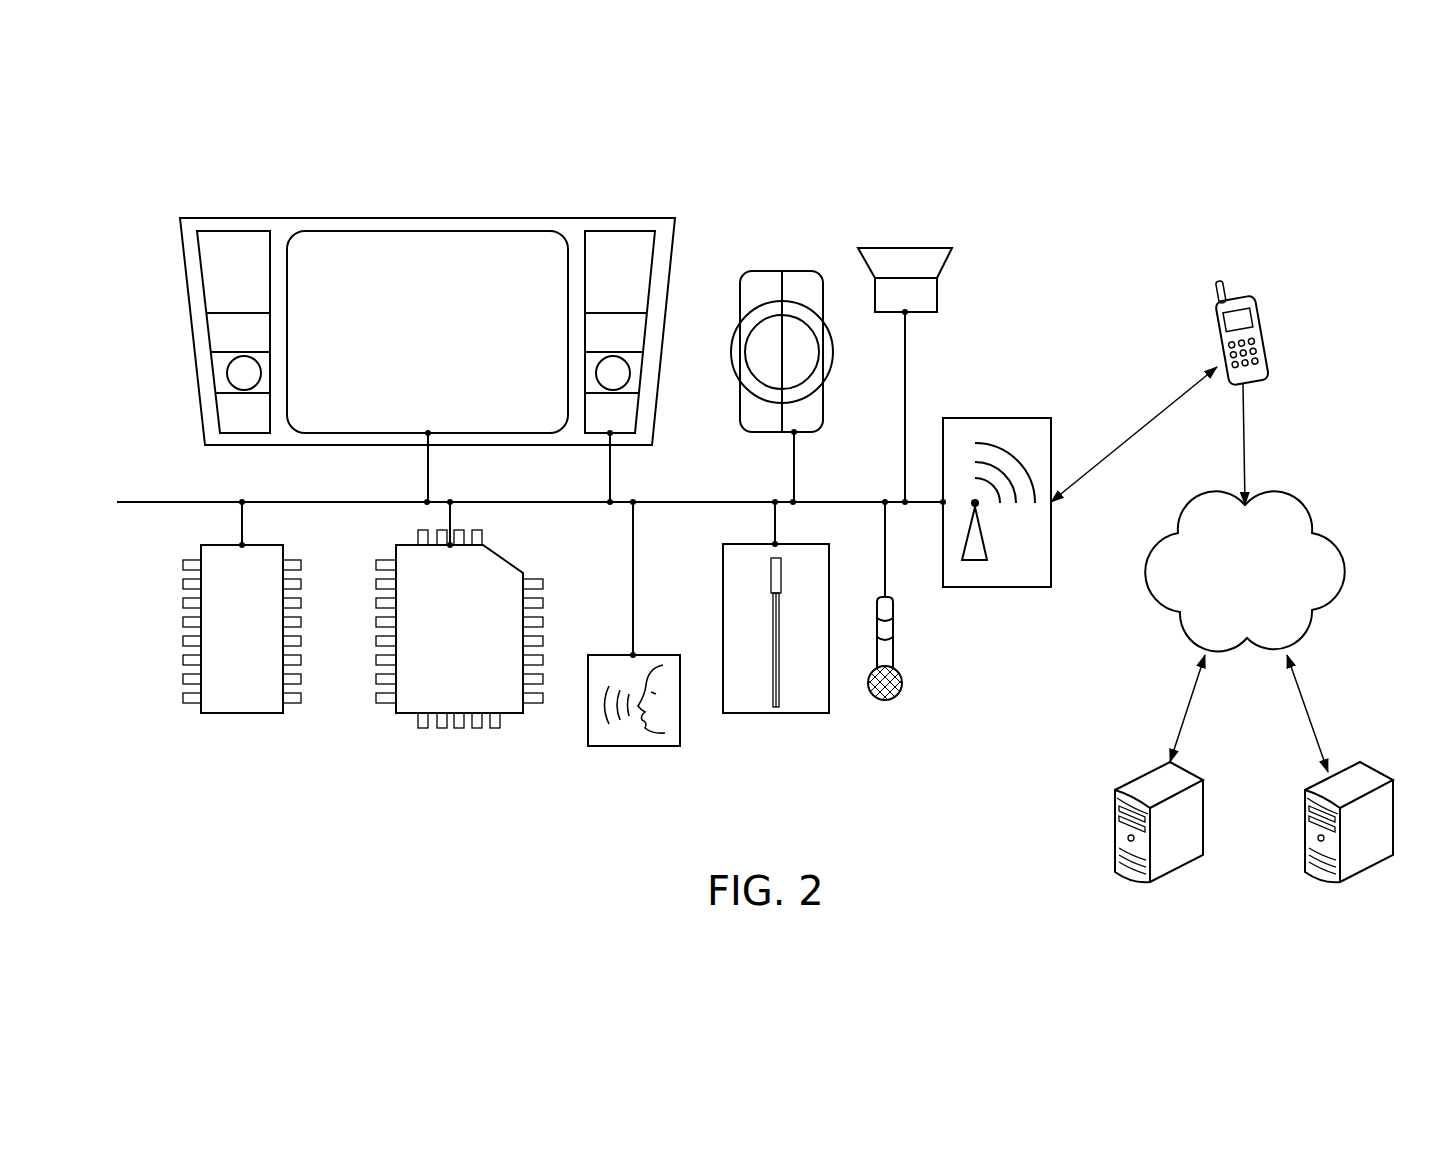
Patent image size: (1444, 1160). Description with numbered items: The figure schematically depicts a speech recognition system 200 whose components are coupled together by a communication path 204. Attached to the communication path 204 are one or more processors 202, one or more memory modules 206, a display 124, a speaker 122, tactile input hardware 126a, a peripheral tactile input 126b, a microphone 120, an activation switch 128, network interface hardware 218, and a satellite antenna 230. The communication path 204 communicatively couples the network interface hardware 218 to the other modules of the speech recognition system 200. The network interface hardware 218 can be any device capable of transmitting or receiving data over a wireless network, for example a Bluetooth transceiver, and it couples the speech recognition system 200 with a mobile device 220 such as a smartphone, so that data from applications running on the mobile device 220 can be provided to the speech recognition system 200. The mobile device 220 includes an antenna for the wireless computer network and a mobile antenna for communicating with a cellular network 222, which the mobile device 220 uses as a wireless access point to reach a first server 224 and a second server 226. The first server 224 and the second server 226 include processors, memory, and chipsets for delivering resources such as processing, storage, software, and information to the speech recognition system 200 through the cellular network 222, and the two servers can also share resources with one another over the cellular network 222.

The speech recognition system 200 is at (1200, 238).
The microphone 120 is at (898, 630).
The speaker 122 is at (925, 247).
The display 124 is at (428, 245).
The tactile input hardware 126a is at (252, 372).
The peripheral tactile input 126b is at (768, 270).
The activation switch 128 is at (613, 748).
The processor 202 is at (405, 716).
The communication path 204 is at (152, 505).
The memory module 206 is at (242, 716).
The network interface hardware 218 is at (998, 417).
The mobile device 220 is at (1255, 302).
The cellular network 222 is at (1285, 492).
The first server 224 is at (1147, 770).
The second server 226 is at (1380, 770).
The satellite antenna 230 is at (775, 716).